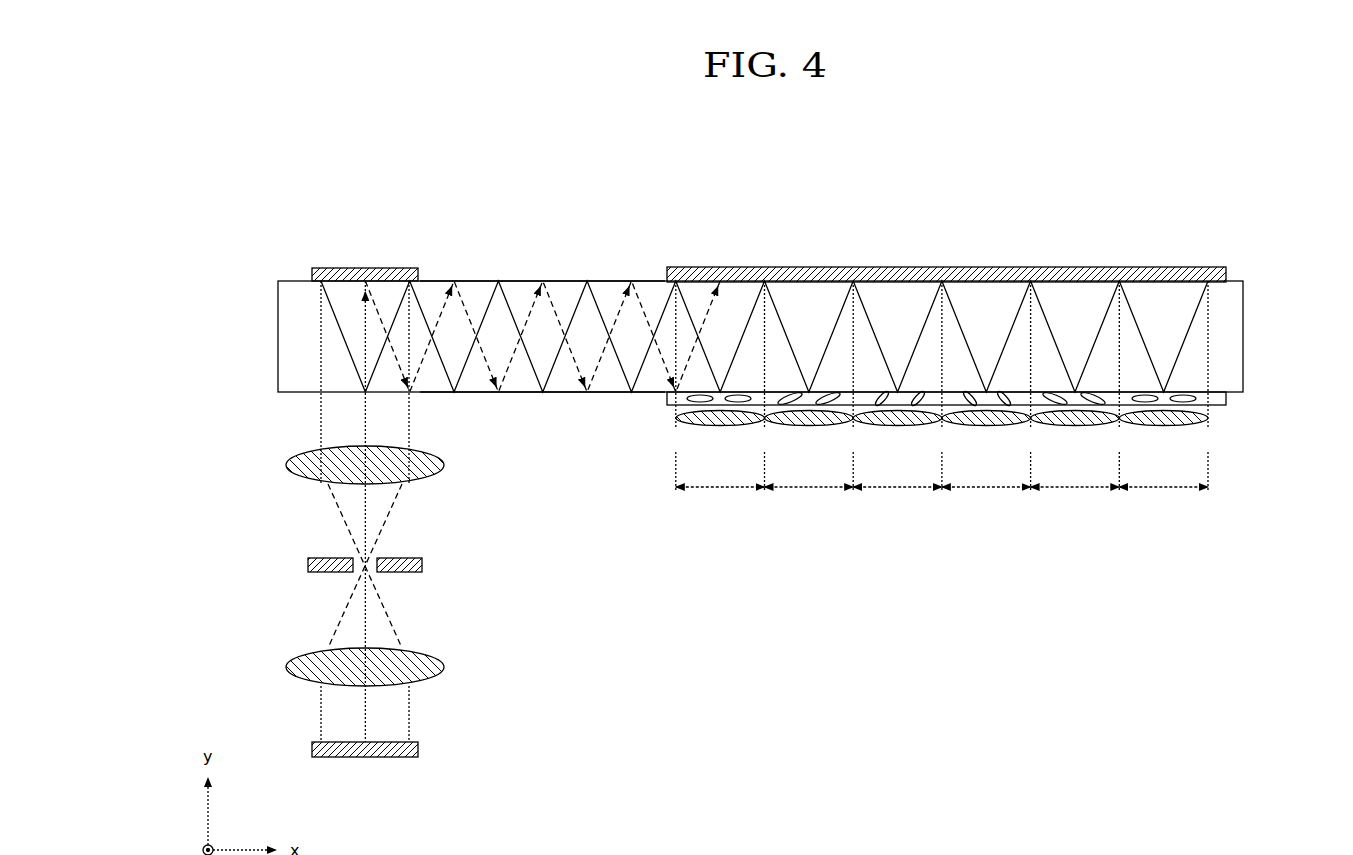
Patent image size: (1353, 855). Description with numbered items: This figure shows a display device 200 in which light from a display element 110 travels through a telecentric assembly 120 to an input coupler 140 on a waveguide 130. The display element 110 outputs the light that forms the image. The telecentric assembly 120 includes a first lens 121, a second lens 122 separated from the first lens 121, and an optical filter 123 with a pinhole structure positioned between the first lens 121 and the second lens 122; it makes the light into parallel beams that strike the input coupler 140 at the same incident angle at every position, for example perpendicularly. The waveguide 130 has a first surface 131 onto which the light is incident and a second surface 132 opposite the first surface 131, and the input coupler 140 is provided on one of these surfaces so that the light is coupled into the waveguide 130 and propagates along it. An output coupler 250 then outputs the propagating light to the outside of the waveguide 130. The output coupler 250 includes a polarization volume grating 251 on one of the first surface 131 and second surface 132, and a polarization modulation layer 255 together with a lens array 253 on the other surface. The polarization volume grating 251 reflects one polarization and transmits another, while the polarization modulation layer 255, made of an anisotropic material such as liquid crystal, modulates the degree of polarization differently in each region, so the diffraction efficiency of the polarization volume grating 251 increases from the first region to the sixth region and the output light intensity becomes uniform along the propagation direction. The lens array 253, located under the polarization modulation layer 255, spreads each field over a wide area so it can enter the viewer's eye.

The display device 200 is at (1230, 220).
The waveguide 130 is at (278, 313).
The first surface 131 is at (558, 279).
The second surface 132 is at (560, 396).
The input coupler 140 is at (312, 273).
The polarization volume grating 251 is at (1228, 275).
The lens array 253 is at (1209, 418).
The polarization modulation layer 255 is at (1228, 398).
The output coupler 250 is at (1203, 695).
The telecentric assembly 120 is at (439, 566).
The first lens 121 is at (413, 649).
The second lens 122 is at (444, 470).
The optical filter 123 is at (422, 565).
The display element 110 is at (418, 748).